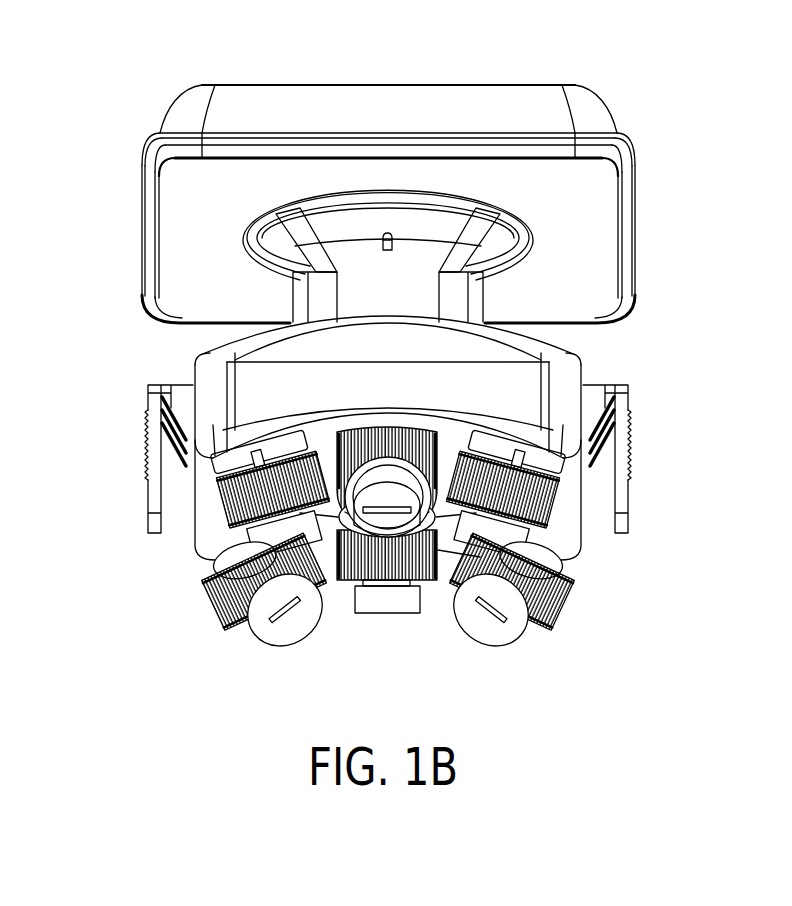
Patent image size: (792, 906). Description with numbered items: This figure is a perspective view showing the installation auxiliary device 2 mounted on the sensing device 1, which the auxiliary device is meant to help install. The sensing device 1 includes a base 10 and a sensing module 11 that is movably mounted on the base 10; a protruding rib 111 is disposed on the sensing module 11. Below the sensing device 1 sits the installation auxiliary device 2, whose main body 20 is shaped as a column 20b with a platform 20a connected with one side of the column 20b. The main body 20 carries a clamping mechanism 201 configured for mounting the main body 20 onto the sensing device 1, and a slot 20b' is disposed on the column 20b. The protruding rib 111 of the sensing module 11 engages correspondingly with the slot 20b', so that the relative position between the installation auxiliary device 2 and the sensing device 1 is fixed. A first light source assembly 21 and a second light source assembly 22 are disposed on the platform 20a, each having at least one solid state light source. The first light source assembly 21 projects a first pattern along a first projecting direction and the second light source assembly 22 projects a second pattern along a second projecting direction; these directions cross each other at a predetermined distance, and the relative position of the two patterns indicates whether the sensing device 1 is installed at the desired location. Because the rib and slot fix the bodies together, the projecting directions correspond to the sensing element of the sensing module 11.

The sensing device 1 is at (412, 115).
The base 10 is at (508, 122).
The sensing module 11 is at (500, 250).
The protruding rib 111 is at (386, 233).
The clamping mechanism 201 is at (303, 247).
The main body 20 is at (405, 476).
The platform 20a is at (515, 409).
The column 20b is at (459, 345).
The slot 20b' is at (216, 407).
The installation auxiliary device 2 is at (548, 417).
The first light source assembly 21 is at (270, 623).
The second light source assembly 22 is at (505, 572).